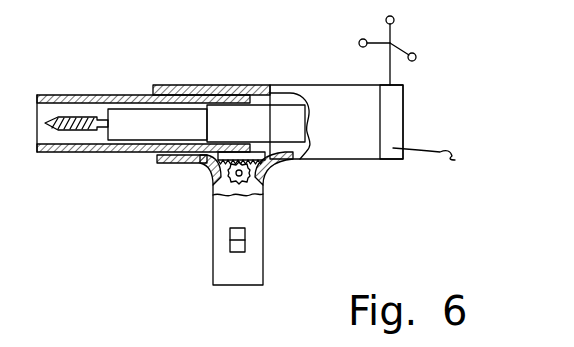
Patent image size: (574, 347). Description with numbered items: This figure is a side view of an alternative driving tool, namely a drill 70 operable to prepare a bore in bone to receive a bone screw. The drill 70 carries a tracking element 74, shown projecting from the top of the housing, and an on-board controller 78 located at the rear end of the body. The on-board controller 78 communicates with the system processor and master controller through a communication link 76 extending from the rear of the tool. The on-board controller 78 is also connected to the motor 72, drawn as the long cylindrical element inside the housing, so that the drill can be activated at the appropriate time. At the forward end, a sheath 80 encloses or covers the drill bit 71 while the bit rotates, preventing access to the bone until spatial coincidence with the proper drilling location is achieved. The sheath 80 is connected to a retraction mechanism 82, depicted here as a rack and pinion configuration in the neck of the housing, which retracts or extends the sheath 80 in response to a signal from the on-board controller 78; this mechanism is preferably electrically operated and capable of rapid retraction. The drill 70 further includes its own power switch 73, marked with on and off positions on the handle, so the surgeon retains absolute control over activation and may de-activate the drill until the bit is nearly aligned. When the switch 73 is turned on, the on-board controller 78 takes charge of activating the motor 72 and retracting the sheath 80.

The drill 70 is at (290, 88).
The drill bit 71 is at (76, 130).
The motor 72 is at (278, 130).
The power switch 73 is at (245, 235).
The tracking element 74 is at (390, 32).
The communication link 76 is at (428, 148).
The on-board controller 78 is at (395, 112).
The sheath 80 is at (88, 95).
The retraction mechanism 82 is at (230, 171).